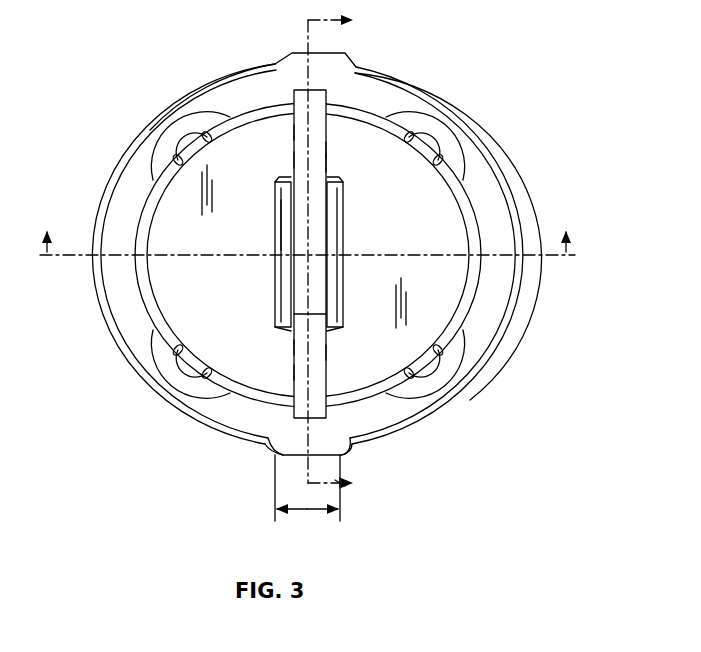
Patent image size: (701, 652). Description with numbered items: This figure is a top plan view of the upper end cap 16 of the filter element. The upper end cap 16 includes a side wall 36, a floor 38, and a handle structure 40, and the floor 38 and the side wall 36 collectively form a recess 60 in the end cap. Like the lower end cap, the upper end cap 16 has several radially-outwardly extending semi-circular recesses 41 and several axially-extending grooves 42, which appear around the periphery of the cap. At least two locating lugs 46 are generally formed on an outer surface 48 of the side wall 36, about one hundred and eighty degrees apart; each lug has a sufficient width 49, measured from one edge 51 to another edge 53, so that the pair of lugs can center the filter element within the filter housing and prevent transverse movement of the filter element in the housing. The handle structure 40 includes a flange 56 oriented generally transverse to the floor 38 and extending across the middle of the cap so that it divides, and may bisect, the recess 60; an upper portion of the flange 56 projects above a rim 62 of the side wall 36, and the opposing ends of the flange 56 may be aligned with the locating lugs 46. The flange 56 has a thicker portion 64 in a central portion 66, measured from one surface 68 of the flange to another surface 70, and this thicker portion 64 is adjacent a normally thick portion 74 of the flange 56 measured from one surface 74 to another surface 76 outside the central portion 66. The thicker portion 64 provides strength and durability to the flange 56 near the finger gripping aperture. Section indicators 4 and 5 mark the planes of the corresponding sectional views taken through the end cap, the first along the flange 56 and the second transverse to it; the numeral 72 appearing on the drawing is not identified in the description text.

The upper end cap 16 is at (507, 92).
The side wall 36 is at (206, 405).
The floor 38 is at (172, 313).
The handle structure 40 is at (324, 102).
The semi-circular recesses 41 is at (196, 125).
The axially-extending grooves 42 is at (180, 150).
The locating lugs 46 is at (292, 62).
The outer surface 48 is at (248, 72).
The width 49 is at (318, 512).
The edge 51 is at (276, 451).
The edge 53 is at (342, 456).
The flange 56 is at (327, 160).
The recess 60 is at (447, 229).
The rim 62 is at (498, 298).
The thicker portion 64 is at (278, 188).
The central portion 66 is at (263, 272).
The surface 68 is at (278, 225).
The surface 70 is at (343, 203).
The bar side wall 72 is at (293, 158).
The normally thick portion 74 is at (293, 131).
The surface 76 is at (327, 150).
The section line 4- 4 is at (339, 251).
The section line 5- 5 is at (307, 231).